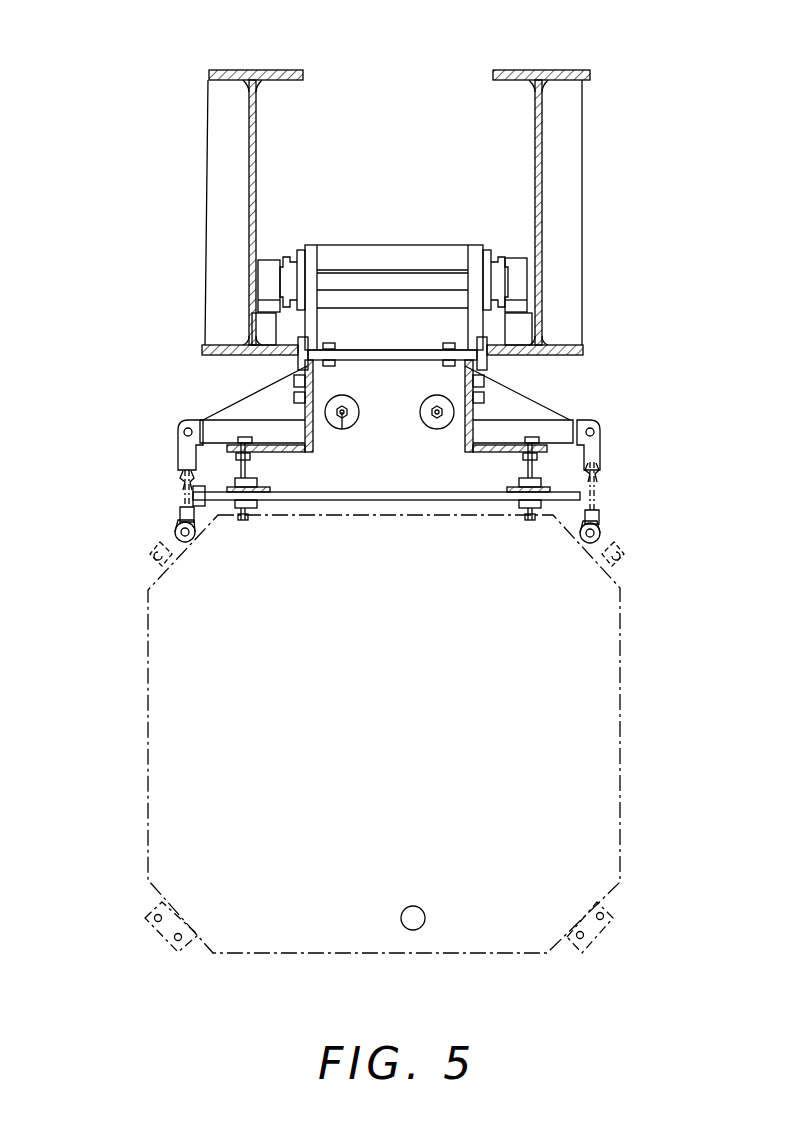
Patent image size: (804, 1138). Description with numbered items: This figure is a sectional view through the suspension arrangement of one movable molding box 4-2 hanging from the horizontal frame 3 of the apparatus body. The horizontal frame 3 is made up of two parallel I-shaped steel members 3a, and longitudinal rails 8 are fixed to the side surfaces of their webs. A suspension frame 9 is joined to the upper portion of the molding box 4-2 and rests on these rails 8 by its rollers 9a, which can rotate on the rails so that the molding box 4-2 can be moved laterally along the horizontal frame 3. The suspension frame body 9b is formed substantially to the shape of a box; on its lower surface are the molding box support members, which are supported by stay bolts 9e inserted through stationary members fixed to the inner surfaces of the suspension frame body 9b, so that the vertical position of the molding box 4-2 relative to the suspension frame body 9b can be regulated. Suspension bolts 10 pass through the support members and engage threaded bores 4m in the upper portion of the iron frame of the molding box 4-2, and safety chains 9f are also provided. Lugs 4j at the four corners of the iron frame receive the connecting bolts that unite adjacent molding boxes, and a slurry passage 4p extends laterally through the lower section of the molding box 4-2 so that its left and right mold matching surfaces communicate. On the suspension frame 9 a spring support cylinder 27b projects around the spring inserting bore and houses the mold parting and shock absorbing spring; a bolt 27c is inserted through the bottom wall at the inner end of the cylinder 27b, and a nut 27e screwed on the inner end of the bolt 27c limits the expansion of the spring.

The horizontal frame 3 is at (600, 202).
The I-shaped steel member 3a is at (278, 70).
The longitudinal rail 8 is at (262, 330).
The suspension frame 9 is at (390, 240).
The roller 9a is at (272, 258).
The suspension frame body 9b is at (315, 385).
The stay bolt 9e is at (252, 468).
The safety chain 9f is at (596, 468).
The suspension bolt 10 is at (520, 482).
The spring support cylinder 27b is at (303, 413).
The bolt 27c is at (350, 412).
The nut 27e is at (340, 429).
The threaded bore 4m is at (520, 512).
The lug 4j is at (174, 533).
The movable molding box 4-2 is at (148, 668).
The slurry passage 4p is at (421, 907).